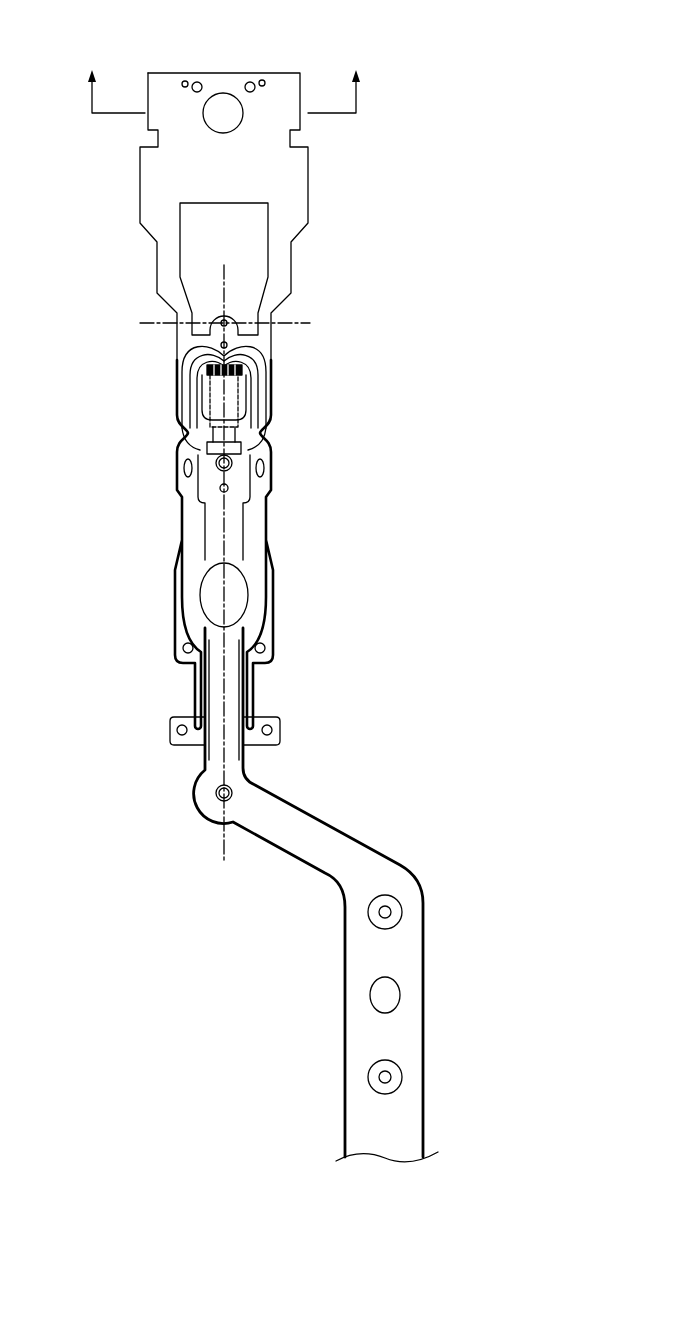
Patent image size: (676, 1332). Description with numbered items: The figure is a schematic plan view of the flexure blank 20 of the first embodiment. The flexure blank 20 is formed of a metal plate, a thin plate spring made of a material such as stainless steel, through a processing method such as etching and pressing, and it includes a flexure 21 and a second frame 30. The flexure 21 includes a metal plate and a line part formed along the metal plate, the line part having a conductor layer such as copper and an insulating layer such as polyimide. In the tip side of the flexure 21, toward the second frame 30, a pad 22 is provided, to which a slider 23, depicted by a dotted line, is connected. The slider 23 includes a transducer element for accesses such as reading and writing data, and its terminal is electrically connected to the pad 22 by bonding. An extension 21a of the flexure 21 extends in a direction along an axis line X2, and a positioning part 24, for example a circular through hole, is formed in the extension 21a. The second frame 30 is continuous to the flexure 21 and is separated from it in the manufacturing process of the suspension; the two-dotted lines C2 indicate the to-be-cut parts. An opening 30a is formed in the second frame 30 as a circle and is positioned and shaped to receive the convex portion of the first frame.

The flexure blank 20 is at (478, 258).
The flexure 21 is at (240, 651).
The extension 21a is at (415, 915).
The pad 22 is at (212, 368).
The slider 23 is at (246, 401).
The positioning part 24 is at (412, 985).
The second frame 30 is at (160, 179).
The opening 30a is at (229, 90).
The axis line X2 is at (222, 696).
The two-dotted lines C2 is at (222, 562).